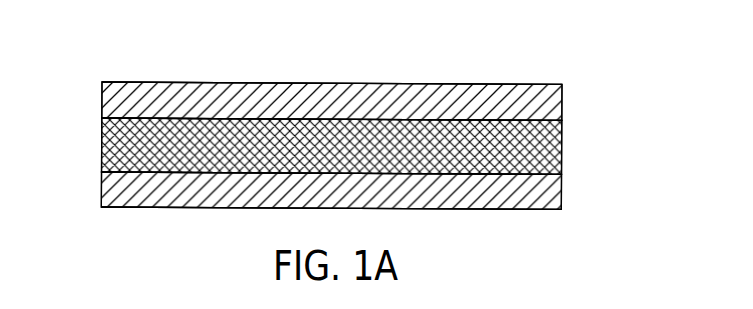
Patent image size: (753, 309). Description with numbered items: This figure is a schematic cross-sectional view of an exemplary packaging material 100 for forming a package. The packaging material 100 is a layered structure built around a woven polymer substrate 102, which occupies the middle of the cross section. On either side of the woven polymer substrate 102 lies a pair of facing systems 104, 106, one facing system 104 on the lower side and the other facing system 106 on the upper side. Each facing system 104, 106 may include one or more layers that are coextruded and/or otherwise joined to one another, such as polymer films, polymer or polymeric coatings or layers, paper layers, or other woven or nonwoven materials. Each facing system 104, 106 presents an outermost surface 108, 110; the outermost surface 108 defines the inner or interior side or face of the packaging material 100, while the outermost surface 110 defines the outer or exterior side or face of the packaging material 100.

The packaging material 100 is at (352, 136).
The woven polymer substrate 102 is at (562, 146).
The facing system 104 is at (98, 172).
The facing system 106 is at (98, 82).
The outermost surface 108 is at (182, 207).
The outermost surface 110 is at (147, 82).